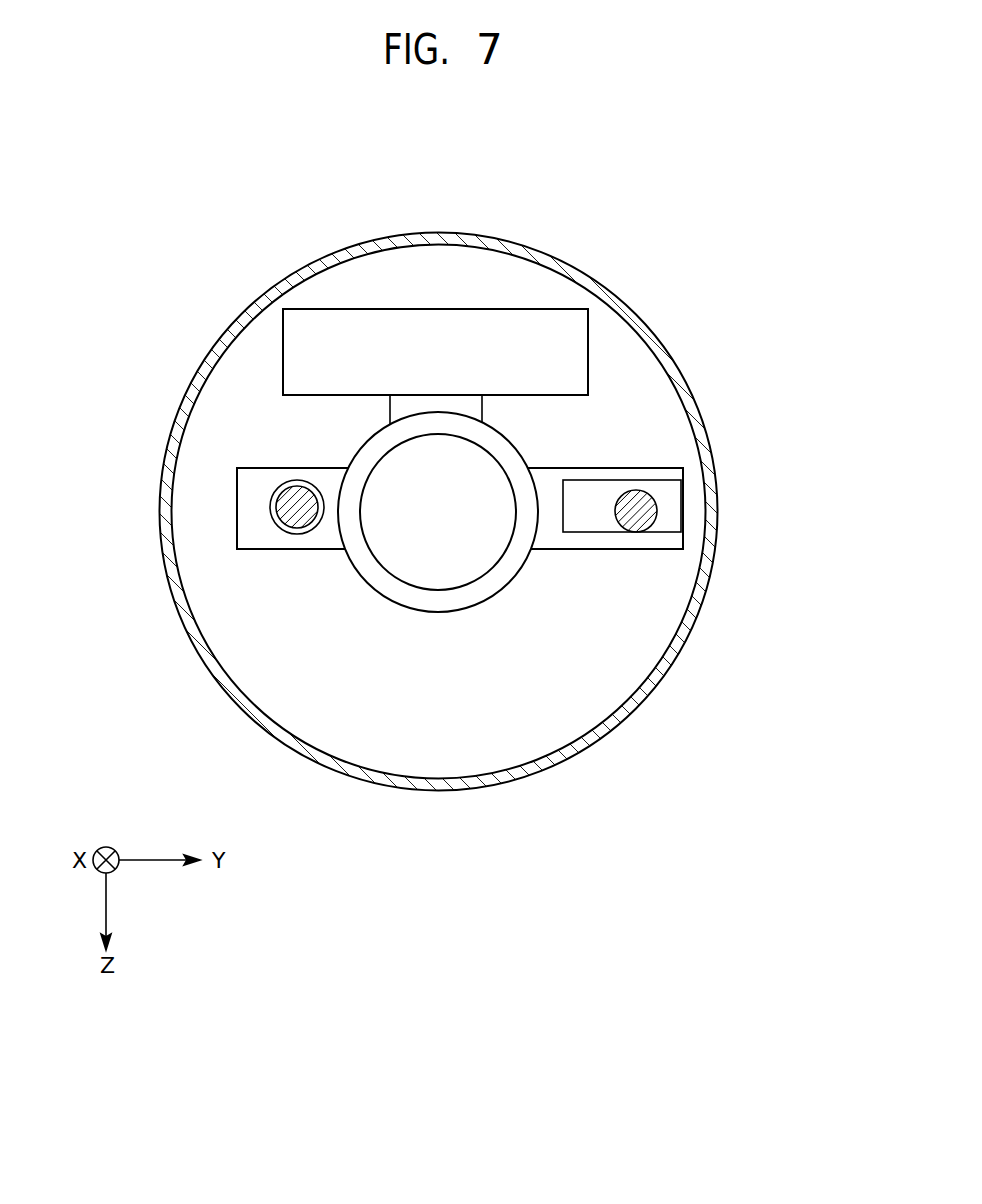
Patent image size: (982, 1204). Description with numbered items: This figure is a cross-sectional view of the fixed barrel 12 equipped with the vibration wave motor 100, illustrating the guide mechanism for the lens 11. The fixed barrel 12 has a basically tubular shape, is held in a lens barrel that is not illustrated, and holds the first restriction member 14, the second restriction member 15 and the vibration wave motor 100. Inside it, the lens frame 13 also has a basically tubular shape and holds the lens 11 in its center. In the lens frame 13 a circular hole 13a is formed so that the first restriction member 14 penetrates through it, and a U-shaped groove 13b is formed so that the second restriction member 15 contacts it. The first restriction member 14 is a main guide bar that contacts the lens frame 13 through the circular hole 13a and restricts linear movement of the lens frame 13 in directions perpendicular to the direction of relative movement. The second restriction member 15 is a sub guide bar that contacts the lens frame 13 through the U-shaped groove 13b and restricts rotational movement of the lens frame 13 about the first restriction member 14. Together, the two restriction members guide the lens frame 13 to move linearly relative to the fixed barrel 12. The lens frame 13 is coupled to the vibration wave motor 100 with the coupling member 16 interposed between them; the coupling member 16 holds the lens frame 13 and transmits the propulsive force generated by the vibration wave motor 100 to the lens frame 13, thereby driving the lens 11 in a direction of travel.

The vibration wave motor 100 is at (556, 333).
The fixed barrel 12 is at (665, 367).
The coupling member 16 is at (472, 404).
The circular hole 13a is at (270, 502).
The first restriction member 14 is at (275, 520).
The second restriction member 15 is at (653, 507).
The U-shaped groove 13b is at (658, 533).
The lens 11 is at (475, 567).
The lens frame 13 is at (463, 599).